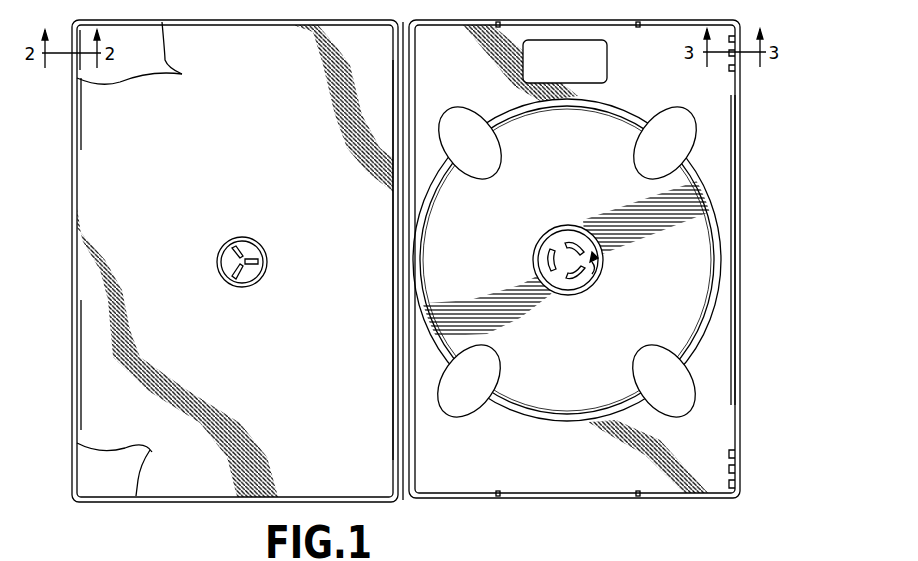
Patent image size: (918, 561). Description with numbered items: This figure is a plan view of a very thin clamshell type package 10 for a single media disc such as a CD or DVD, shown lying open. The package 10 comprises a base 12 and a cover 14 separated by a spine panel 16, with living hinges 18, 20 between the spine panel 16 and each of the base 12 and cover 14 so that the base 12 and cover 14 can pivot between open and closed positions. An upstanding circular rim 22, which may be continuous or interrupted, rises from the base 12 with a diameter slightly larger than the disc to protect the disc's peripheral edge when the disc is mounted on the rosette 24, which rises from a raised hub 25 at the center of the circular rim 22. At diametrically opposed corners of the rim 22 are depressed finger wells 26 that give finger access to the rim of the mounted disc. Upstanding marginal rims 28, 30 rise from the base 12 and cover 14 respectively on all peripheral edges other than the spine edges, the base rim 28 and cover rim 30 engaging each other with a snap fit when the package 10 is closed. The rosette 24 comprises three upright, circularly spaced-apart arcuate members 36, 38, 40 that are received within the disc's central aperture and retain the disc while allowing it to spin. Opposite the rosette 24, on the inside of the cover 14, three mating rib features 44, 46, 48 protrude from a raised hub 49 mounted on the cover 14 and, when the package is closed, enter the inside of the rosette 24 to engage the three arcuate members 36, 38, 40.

The clamshell type package 10 is at (82, 534).
The base 12 is at (618, 500).
The cover 14 is at (192, 502).
The spine panel 16 is at (408, 478).
The living hinge 18 is at (408, 434).
The living hinge 20 is at (397, 403).
The upstanding circular rim 22 is at (615, 100).
The rosette 24 is at (600, 256).
The raised hub 25 is at (592, 274).
The depressed finger wells 26 is at (470, 127).
The base rim 28 is at (742, 110).
The cover rim 30 is at (181, 73).
The upright arcuate member 36 is at (546, 253).
The upright arcuate member 38 is at (578, 245).
The upright arcuate member 40 is at (580, 276).
The mating rib feature 44 is at (262, 255).
The mating rib feature 46 is at (225, 252).
The mating rib feature 48 is at (226, 280).
The raised hub 49 is at (258, 280).